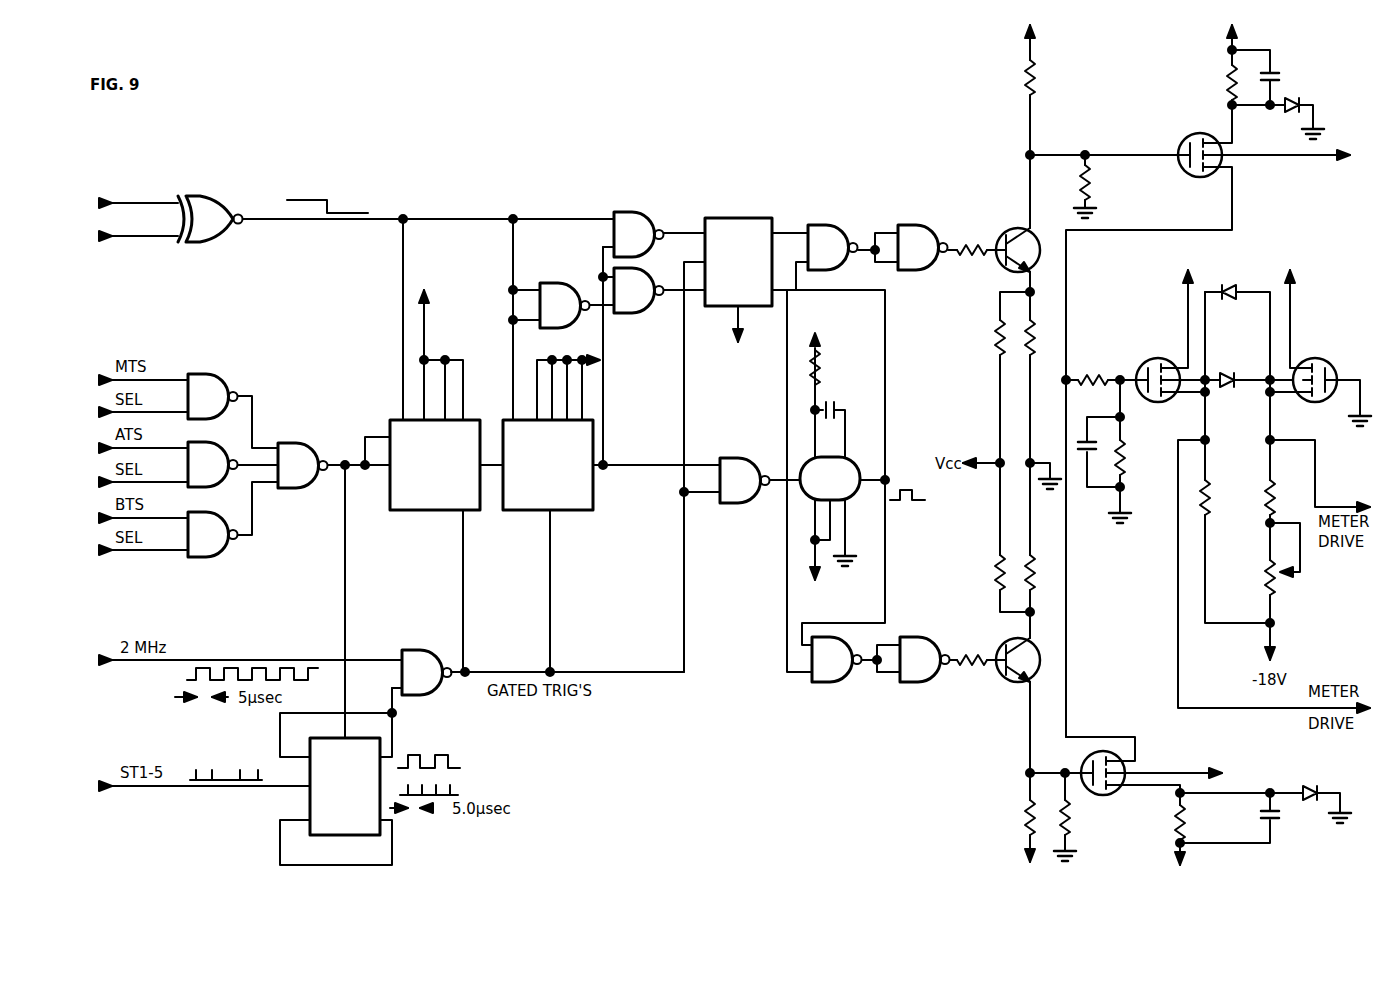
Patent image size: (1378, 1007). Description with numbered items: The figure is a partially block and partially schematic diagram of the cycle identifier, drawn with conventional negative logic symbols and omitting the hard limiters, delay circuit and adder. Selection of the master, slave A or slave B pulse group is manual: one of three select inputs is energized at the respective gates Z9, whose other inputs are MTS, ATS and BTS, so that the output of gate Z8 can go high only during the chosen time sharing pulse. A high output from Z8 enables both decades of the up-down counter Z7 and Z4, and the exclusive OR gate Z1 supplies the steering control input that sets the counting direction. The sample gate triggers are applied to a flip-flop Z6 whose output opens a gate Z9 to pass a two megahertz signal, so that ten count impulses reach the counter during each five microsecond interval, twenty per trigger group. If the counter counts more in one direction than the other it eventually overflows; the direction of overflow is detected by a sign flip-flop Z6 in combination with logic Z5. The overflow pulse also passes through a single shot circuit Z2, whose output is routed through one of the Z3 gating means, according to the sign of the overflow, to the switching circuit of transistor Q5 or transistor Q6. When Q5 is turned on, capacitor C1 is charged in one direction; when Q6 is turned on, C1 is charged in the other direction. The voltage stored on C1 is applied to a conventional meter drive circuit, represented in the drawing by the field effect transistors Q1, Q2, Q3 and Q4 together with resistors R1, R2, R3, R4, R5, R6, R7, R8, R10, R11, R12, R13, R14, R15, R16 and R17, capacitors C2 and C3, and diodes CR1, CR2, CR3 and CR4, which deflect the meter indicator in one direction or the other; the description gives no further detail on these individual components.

The gate Z1 is at (171, 219).
The gates Z9 is at (391, 534).
The gate Z8 is at (334, 465).
The up-down counter Z7 is at (446, 470).
The up-down counter Z4 is at (611, 512).
The logic Z5 is at (654, 357).
The flip-flop Z6 is at (435, 541).
The gating means Z3 is at (882, 453).
The single shot circuit Z2 is at (841, 460).
The transistor Q5 is at (1007, 223).
The transistor Q6 is at (1040, 668).
The FET 3N156 Q3 is at (1191, 421).
The FET 3N156 Q4 is at (1112, 757).
The FET 2N4351 Q1 is at (1170, 323).
The FET 2N4351 Q2 is at (1320, 335).
The potentiometer 1K R1 is at (1271, 573).
The resistor 5.6K R2 is at (1235, 546).
The resistor R3 is at (1250, 274).
The resistor 10M R4 is at (1135, 470).
The resistor 1M R5 is at (1101, 378).
The resistor 3.3K R6 is at (1167, 848).
The resistor 1.5K R7 is at (1016, 832).
The resistor 10M R8 is at (1080, 817).
The resistor 1.5K R10 is at (1050, 89).
The resistor 10M R11 is at (1100, 186).
The resistor 2.2K R12 is at (976, 680).
The resistor 330 R13 is at (998, 537).
The resistor 560 R14 is at (1047, 537).
The resistor 560 R15 is at (1047, 377).
The resistor 330 R16 is at (998, 377).
The resistor 2.2K R17 is at (976, 270).
The capacitor C1 is at (1091, 461).
The capacitor 1uf C2 is at (1244, 822).
The capacitor 1uf C3 is at (1270, 77).
The diode CR1 is at (1249, 370).
The diode CR2 is at (1237, 323).
The diode 1N914 CR3 is at (1319, 783).
The diode 1N914 CR4 is at (1302, 110).